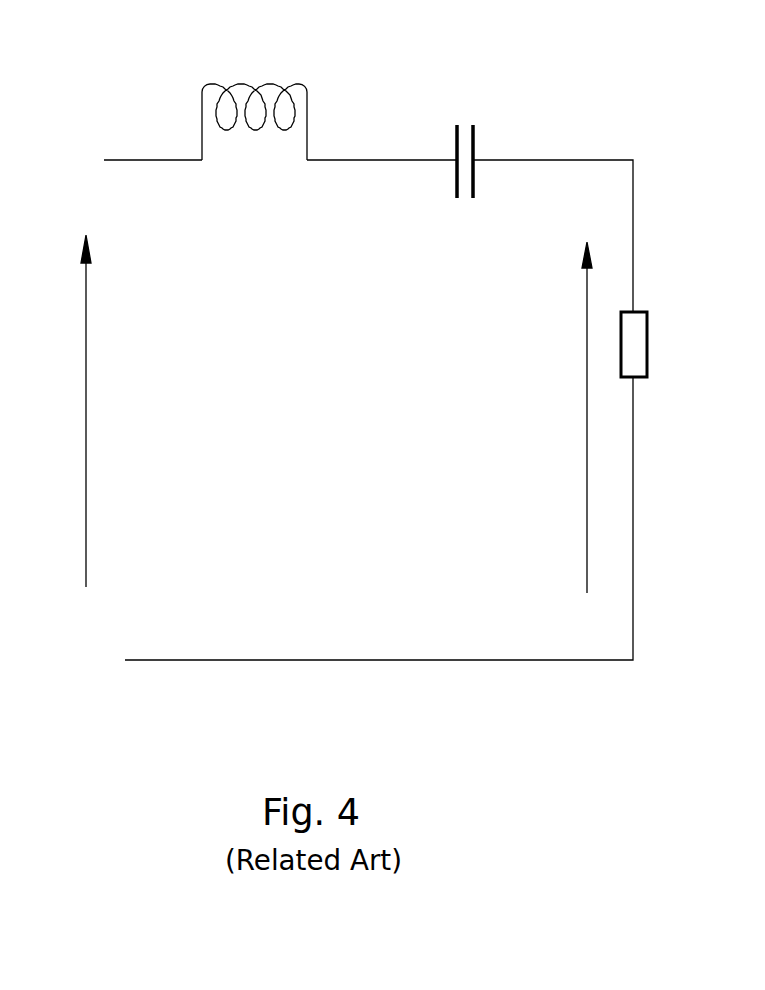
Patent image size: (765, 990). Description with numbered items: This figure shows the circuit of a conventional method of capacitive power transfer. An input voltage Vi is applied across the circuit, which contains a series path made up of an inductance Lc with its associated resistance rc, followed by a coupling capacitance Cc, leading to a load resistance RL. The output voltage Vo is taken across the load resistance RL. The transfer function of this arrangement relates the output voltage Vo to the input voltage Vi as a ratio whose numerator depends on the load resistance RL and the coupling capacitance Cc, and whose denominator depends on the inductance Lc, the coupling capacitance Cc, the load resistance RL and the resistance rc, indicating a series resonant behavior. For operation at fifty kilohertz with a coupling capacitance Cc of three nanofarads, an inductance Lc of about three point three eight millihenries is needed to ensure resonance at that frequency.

The resistance rc is at (254, 97).
The inductance Lc is at (254, 97).
The coupling capacitance Cc is at (462, 137).
The load resistance RL is at (658, 354).
The input voltage Vi is at (65, 411).
The output voltage Vo is at (566, 417).